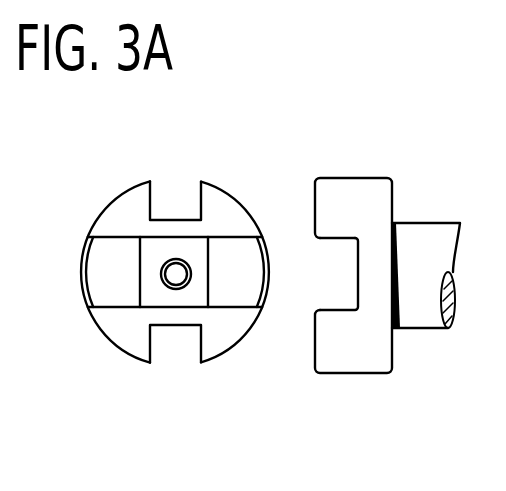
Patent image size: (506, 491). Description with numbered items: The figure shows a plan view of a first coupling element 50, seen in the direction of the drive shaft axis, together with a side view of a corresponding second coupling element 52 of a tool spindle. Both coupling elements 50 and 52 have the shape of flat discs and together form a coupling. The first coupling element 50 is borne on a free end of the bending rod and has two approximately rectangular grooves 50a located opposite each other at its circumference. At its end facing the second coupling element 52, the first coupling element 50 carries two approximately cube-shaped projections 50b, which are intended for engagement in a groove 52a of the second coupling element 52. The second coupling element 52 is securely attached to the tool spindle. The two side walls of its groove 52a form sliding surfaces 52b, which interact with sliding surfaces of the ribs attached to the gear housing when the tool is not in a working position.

The first coupling element 50 is at (247, 175).
The grooves 50a is at (169, 213).
The projections 50b is at (112, 279).
The second coupling element 52 is at (402, 176).
The groove 52a is at (338, 282).
The sliding surfaces 52b is at (343, 243).